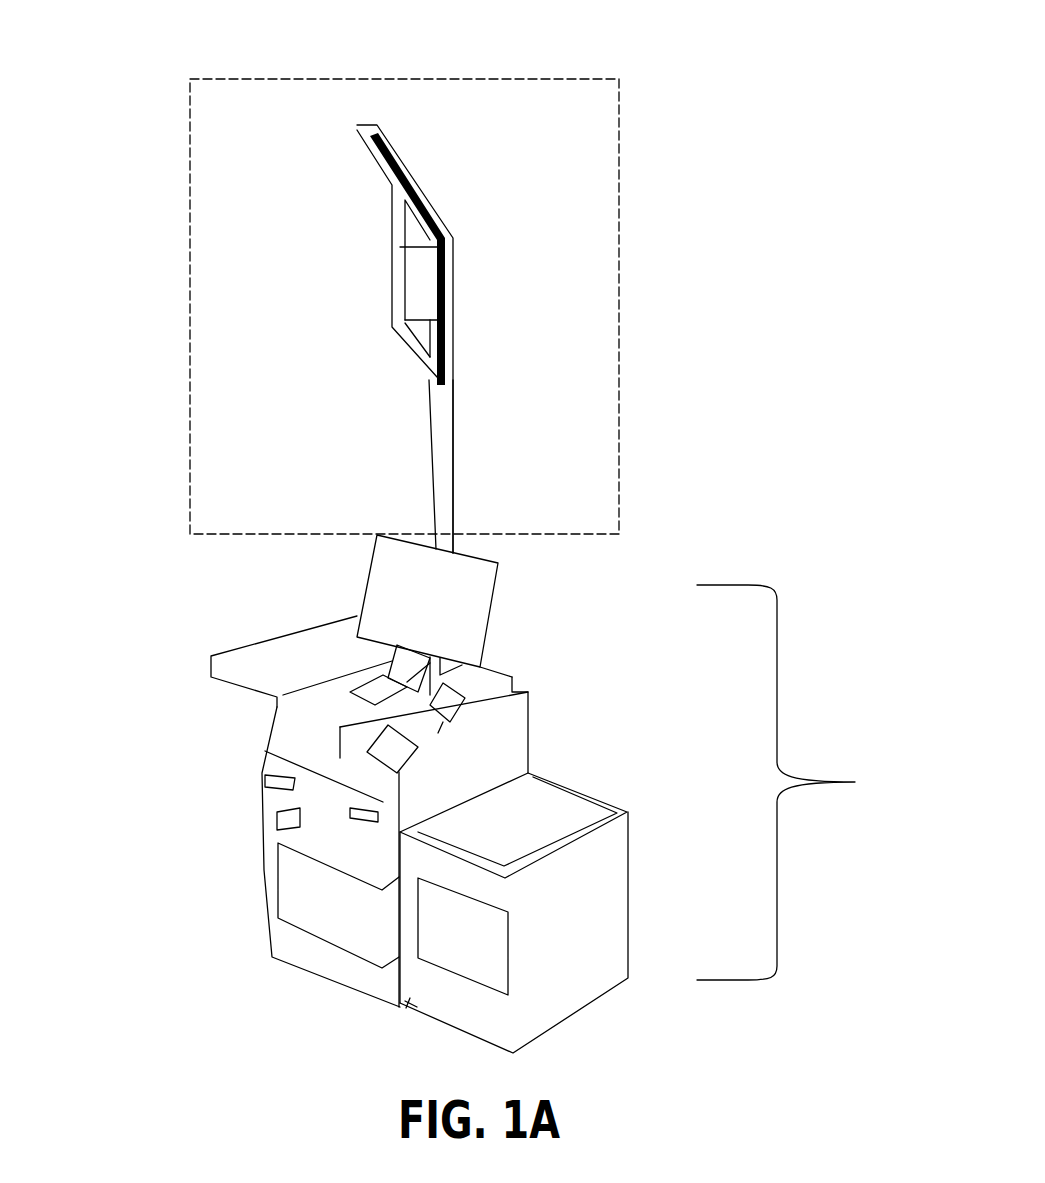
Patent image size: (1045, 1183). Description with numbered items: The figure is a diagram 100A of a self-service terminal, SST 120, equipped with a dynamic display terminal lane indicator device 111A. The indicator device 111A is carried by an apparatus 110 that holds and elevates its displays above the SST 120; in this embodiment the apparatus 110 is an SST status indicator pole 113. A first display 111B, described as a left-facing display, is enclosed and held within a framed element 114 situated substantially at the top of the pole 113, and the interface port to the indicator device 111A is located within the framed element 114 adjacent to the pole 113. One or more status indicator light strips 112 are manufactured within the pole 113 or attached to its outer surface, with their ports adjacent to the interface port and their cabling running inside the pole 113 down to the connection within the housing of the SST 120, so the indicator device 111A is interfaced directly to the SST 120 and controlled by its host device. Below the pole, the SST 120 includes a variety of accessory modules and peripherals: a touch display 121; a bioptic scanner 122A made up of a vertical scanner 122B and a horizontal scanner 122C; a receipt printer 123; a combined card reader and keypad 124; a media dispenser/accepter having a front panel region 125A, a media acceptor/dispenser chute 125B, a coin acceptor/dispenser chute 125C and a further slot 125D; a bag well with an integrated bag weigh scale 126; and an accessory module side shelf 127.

The diagram 100A is at (131, 86).
The apparatus 110 is at (440, 316).
The indicator device 111A is at (418, 265).
The first display 111B is at (340, 260).
The status indicator light strips 112 is at (443, 290).
The SST status indicator pole 113 is at (448, 428).
The framed element 114 is at (393, 327).
The SST 120 is at (530, 794).
The touch display 121 is at (493, 590).
The bioptic scanner 122A is at (318, 706).
The vertical scanner 122B is at (392, 662).
The horizontal scanner 122C is at (354, 681).
The receipt printer 123 is at (457, 705).
The combined card reader and keypad 124 is at (445, 772).
The front panel 125A is at (327, 961).
The media acceptor/dispenser chute 125B is at (370, 821).
The coin acceptor/dispenser chute 125C is at (277, 816).
The slot 125D is at (263, 772).
The bag well with integrated bag weigh scale 126 is at (627, 900).
The accessory module side shelf 127 is at (258, 650).